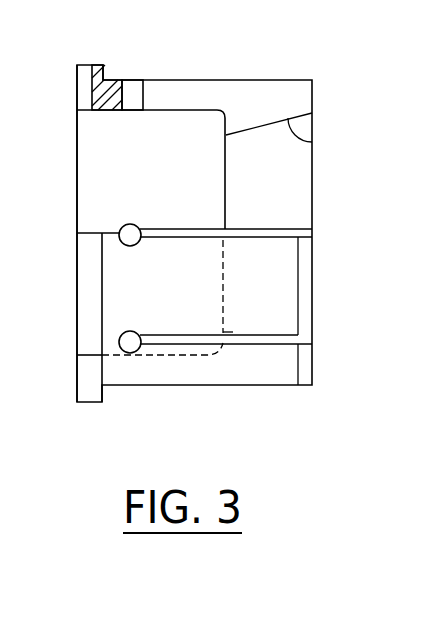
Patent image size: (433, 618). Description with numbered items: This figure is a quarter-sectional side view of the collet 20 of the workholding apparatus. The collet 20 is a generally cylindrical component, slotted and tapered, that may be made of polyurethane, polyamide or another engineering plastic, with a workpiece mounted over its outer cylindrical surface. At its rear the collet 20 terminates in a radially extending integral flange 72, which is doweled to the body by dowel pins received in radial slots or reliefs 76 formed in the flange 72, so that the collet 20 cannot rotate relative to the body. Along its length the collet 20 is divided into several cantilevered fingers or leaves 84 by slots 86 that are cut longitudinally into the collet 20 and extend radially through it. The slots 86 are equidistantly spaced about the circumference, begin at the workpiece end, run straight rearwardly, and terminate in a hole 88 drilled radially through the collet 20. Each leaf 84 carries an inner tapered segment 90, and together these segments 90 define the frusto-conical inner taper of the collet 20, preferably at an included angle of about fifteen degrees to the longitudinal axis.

The collet 20 is at (245, 43).
The radially extending integral flange 72 is at (97, 63).
The radial slots or reliefs 76 is at (80, 77).
The cantilevered fingers or leaves 84 is at (305, 85).
The slots 86 is at (262, 240).
The hole 88 is at (132, 80).
The inner tapered segments 90 is at (312, 141).